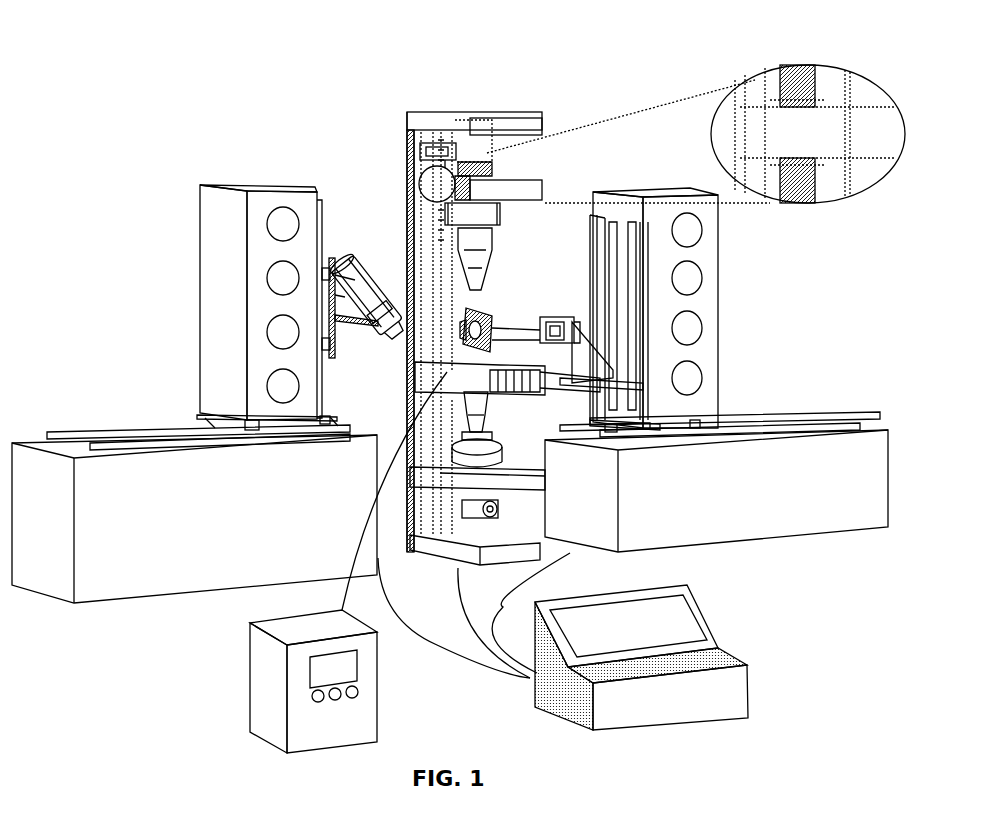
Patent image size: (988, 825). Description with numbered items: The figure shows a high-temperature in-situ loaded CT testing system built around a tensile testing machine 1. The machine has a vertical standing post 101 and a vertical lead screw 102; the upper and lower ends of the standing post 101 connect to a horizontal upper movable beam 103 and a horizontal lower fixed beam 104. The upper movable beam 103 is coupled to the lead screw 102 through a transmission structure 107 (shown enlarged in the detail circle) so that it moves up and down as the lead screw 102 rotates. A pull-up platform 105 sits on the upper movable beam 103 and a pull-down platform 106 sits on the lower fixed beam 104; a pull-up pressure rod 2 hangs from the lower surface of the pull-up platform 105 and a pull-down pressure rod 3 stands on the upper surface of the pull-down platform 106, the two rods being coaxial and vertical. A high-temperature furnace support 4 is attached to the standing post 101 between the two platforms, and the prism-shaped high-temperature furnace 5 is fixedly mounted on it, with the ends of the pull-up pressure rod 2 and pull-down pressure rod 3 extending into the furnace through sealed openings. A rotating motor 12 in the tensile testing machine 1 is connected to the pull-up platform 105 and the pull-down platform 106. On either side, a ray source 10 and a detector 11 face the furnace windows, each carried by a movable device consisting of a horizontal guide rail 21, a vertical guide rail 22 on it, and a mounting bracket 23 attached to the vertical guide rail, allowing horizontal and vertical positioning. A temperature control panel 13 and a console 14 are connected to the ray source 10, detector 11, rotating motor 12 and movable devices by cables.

The tensile testing machine 1 is at (406, 137).
The pull-up pressure rod 2 is at (481, 291).
The pull-down pressure rod 3 is at (478, 390).
The high-temperature furnace support 4 is at (455, 378).
The high-temperature furnace 5 is at (481, 325).
The ray source 10 is at (394, 347).
The detector 11 is at (541, 318).
The rotating motor 12 is at (421, 152).
The temperature control panel 13 is at (248, 730).
The console 14 is at (748, 690).
The horizontal guide rail 21 is at (194, 509).
The vertical guide rail 22 is at (261, 302).
The mounting bracket 23 is at (343, 322).
The standing post 101 is at (413, 273).
The lead screw 102 is at (435, 210).
The upper movable beam 103 is at (510, 183).
The lower fixed beam 104 is at (502, 476).
The pull-up platform 105 is at (501, 216).
The pull-down platform 106 is at (500, 445).
The transmission structure 107 is at (810, 100).